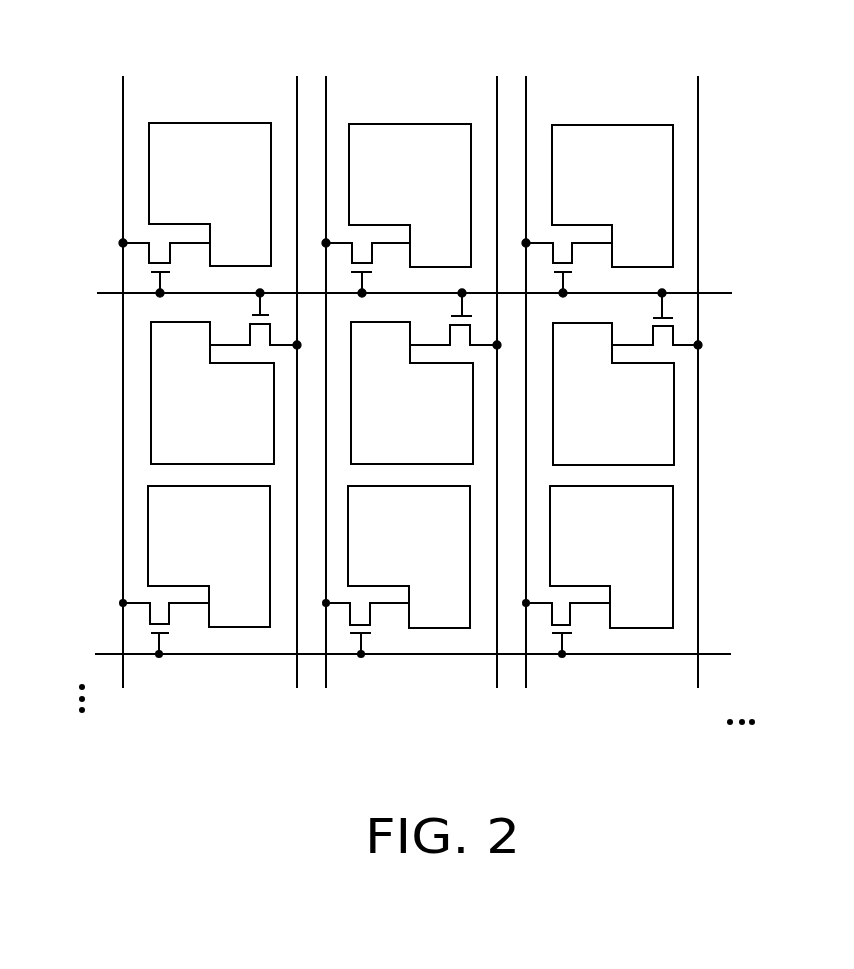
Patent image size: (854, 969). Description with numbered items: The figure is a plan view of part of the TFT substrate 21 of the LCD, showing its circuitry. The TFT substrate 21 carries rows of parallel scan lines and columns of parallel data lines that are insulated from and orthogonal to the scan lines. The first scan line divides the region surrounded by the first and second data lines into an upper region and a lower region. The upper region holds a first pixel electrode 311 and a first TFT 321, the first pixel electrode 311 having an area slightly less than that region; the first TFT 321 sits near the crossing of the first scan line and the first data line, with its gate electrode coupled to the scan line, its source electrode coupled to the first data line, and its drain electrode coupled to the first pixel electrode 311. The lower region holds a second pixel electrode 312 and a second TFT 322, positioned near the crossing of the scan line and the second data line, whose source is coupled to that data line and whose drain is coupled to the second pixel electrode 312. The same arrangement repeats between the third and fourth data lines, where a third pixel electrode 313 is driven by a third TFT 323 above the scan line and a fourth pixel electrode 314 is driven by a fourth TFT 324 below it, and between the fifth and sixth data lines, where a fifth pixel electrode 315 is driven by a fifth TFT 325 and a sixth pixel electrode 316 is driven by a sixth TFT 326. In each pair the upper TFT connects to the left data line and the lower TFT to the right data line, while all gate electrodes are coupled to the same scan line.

The TFT substrate 21 is at (447, 25).
The first pixel electrode 311 is at (164, 195).
The second pixel electrode 312 is at (175, 388).
The third pixel electrode 313 is at (397, 163).
The fourth pixel electrode 314 is at (391, 409).
The fifth pixel electrode 315 is at (633, 155).
The sixth pixel electrode 316 is at (647, 388).
The first TFT 321 is at (158, 243).
The second TFT 322 is at (248, 322).
The third TFT 323 is at (360, 250).
The fourth TFT 324 is at (462, 340).
The fifth TFT 325 is at (560, 245).
The sixth TFT 326 is at (662, 343).